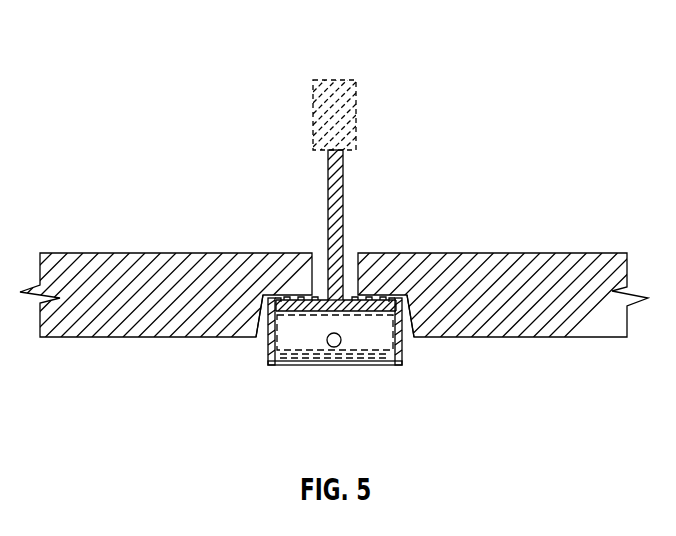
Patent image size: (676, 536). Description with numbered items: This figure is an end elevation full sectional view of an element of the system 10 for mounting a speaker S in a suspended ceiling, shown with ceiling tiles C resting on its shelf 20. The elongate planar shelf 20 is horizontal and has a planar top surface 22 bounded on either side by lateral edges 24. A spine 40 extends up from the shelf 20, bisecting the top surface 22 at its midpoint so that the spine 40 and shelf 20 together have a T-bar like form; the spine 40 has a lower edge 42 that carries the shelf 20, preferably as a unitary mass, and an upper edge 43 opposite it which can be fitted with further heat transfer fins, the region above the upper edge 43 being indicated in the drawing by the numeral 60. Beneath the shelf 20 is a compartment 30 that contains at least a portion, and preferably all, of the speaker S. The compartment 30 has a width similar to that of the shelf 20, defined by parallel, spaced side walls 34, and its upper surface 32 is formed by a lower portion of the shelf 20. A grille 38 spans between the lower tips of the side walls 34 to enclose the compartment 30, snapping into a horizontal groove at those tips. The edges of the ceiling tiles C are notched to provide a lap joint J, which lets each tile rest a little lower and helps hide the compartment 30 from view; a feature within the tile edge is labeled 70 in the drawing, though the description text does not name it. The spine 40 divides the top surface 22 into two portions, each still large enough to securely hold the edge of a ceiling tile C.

The system 10 is at (459, 193).
The shelf 20 is at (366, 292).
The top surface 22 is at (313, 297).
The lateral edges 24 is at (268, 300).
The compartment 30 is at (307, 340).
The upper surface 32 is at (345, 312).
The side walls 34 is at (268, 358).
The grille 38 is at (334, 349).
The spine 40 is at (358, 165).
The lower edge 42 is at (343, 273).
The upper edge 43 is at (330, 155).
The threaded cap 60 is at (350, 73).
The embedded anchor 70 is at (280, 272).
The ceiling tiles C is at (90, 258).
The lap joint J is at (260, 315).
The speaker S is at (373, 367).